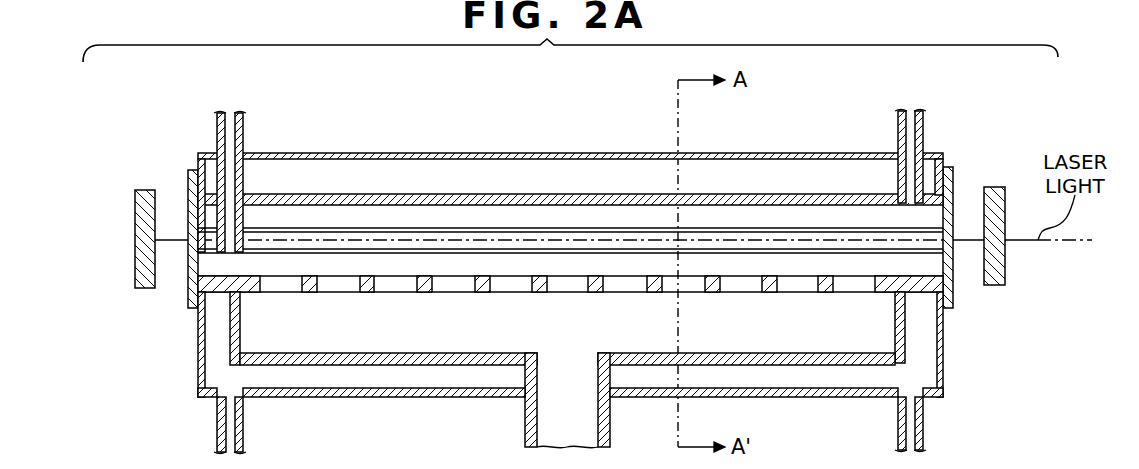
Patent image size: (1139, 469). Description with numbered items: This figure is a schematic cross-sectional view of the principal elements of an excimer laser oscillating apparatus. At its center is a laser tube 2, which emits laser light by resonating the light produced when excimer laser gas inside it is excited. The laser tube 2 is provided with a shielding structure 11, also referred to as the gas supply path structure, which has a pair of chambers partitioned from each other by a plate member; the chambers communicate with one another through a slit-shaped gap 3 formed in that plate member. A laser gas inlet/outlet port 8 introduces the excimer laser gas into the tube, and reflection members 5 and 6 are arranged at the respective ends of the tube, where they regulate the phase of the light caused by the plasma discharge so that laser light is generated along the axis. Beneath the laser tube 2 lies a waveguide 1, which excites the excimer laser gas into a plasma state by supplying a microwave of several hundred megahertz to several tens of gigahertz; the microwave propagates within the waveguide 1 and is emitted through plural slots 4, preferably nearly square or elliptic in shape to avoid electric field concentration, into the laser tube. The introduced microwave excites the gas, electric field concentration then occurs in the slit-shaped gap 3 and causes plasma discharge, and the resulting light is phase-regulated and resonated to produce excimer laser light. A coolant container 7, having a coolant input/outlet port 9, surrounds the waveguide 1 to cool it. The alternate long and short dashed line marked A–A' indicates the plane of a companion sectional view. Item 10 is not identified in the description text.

The waveguide 1 is at (350, 367).
The laser tube 2 is at (545, 193).
The gap 3 is at (770, 228).
The slots 4 is at (792, 285).
The reflection member 5 is at (1007, 270).
The reflection member 6 is at (135, 262).
The coolant container 7 is at (297, 398).
The laser gas inlet/outlet port 8 is at (245, 125).
The coolant input/outlet port 9 is at (218, 432).
The slot 10 is at (448, 278).
The shielding structure 11 is at (405, 177).